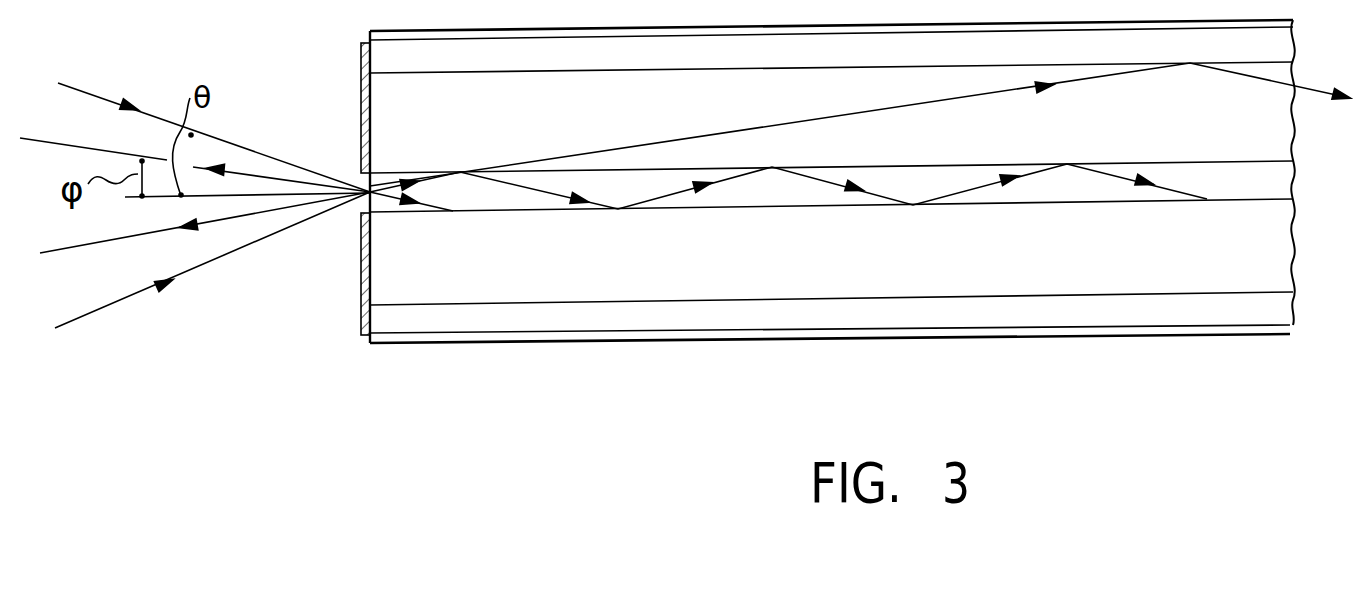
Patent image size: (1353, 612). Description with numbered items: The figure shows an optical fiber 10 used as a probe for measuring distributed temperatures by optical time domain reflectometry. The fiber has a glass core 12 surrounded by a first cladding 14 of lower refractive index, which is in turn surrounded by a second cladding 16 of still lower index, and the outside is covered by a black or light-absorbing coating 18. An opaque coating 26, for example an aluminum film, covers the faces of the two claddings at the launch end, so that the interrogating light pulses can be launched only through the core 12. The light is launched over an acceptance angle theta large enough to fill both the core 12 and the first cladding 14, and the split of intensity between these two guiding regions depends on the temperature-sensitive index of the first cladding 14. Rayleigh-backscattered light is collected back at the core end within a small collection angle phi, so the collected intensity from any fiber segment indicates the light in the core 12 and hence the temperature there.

The optical fiber 10 is at (472, 350).
The glass core 12 is at (475, 203).
The first cladding 14 is at (568, 280).
The second cladding 16 is at (626, 318).
The light-absorbing coating 18 is at (696, 338).
The opaque coating 26 is at (360, 288).